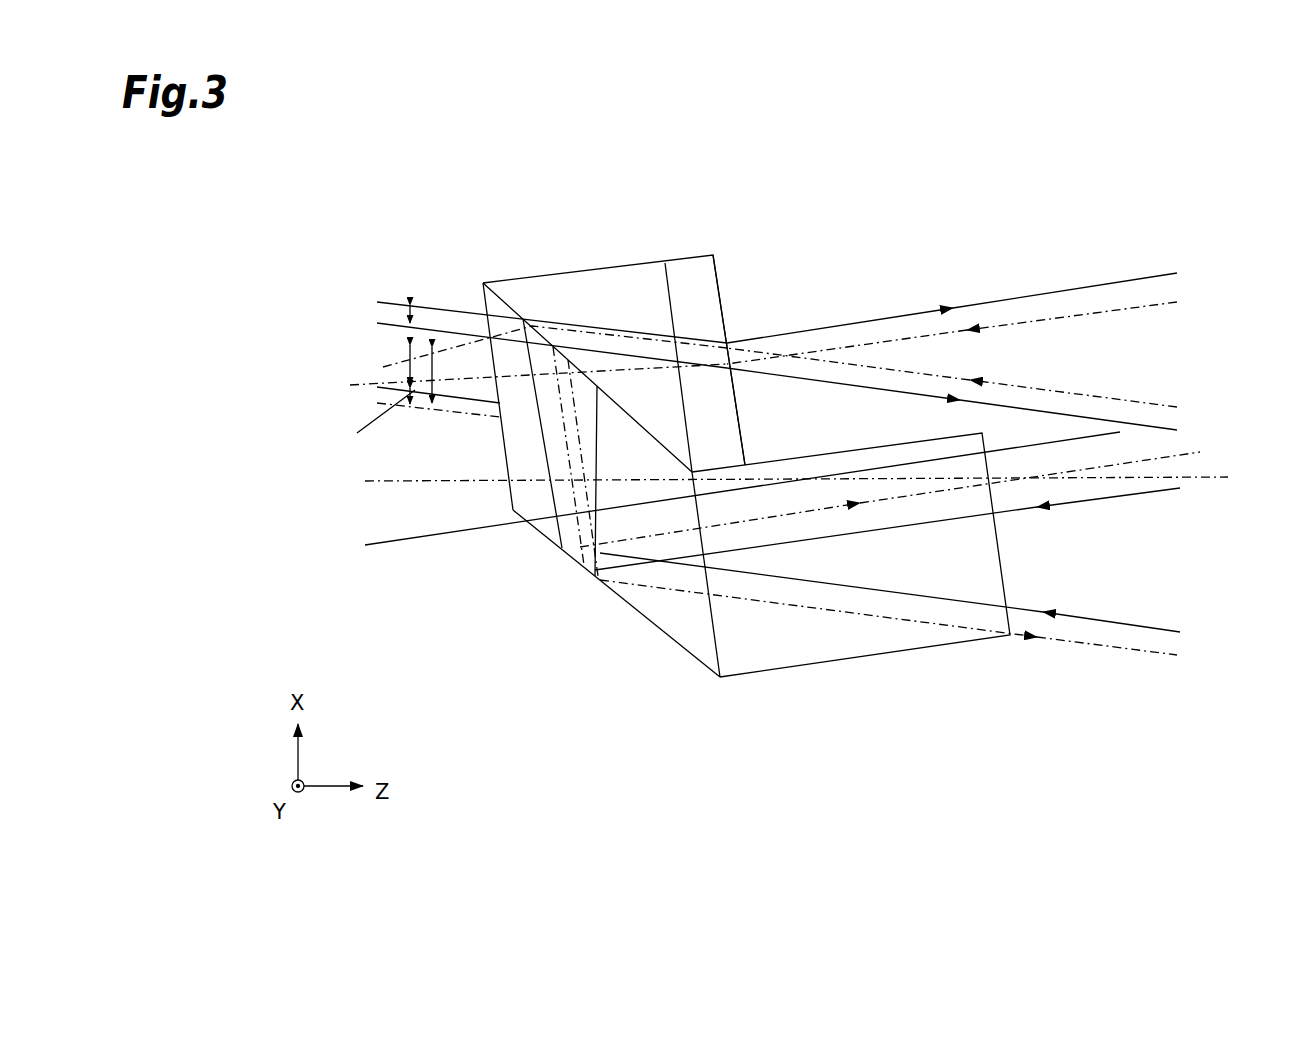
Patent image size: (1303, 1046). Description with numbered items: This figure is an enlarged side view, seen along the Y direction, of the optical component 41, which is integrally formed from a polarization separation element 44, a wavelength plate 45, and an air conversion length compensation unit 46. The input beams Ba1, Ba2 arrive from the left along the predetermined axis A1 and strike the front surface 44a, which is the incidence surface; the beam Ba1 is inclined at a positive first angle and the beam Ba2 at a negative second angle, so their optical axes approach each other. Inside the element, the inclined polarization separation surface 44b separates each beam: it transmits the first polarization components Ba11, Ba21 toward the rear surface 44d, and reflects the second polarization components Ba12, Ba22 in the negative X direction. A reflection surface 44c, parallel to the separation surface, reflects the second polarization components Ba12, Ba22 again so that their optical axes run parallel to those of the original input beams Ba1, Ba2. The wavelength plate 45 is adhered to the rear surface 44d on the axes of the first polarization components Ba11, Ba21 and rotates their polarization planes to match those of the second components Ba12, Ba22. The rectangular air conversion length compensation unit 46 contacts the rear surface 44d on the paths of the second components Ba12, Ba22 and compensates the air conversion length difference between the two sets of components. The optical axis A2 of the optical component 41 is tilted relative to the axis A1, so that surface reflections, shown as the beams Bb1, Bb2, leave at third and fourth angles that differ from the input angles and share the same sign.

The optical component 41 is at (806, 256).
The polarization separation element 44 is at (600, 258).
The front surface 44a is at (503, 455).
The polarization separation surface 44b is at (643, 432).
The reflection surface 44c is at (668, 626).
The rear surface 44d is at (676, 306).
The wavelength plate 45 is at (683, 250).
The air conversion length compensation unit 46 is at (832, 667).
The predetermined axis A1 is at (428, 477).
The optical axis A2 is at (407, 540).
The input beam Ba1 is at (388, 404).
The input beam Ba2 is at (443, 327).
The light beam Bb1 is at (418, 420).
The light beam Bb2 is at (405, 301).
The first polarization component Ba11 is at (1060, 293).
The second polarization component Ba12 is at (1150, 305).
The first polarization component Ba21 is at (1058, 414).
The second polarization component Ba22 is at (1153, 398).